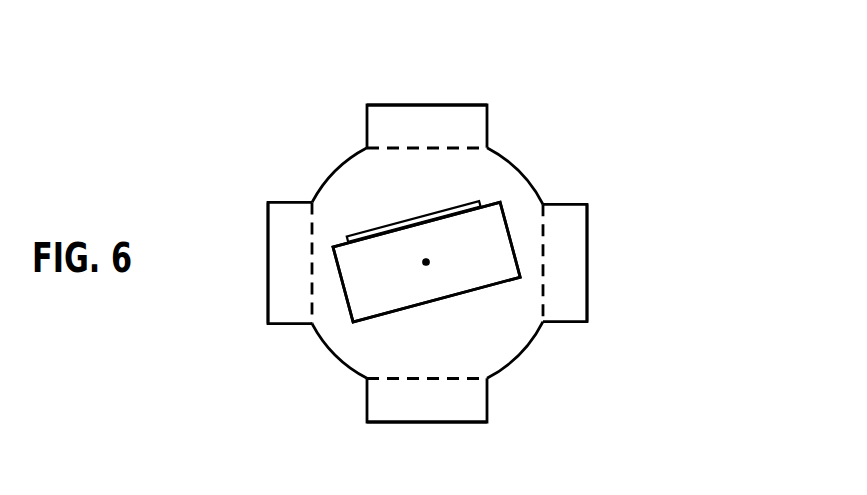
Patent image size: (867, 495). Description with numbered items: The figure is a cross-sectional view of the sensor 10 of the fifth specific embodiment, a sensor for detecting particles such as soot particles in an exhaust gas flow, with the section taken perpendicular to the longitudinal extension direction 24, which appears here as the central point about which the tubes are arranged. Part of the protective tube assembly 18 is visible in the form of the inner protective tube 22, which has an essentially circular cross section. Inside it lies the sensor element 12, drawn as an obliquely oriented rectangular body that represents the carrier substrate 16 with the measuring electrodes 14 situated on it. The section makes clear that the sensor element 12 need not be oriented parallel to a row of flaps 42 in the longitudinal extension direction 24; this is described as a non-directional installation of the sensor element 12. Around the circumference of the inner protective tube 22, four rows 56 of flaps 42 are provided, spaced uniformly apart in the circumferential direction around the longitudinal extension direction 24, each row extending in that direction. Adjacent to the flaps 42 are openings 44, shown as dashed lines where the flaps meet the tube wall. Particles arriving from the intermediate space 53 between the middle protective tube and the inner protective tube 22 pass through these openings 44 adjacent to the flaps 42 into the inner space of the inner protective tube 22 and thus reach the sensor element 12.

The sensor 10 is at (557, 366).
The sensor element 12 is at (494, 224).
The measuring electrodes 14 is at (378, 228).
The carrier substrate 16 is at (473, 254).
The protective tube assembly 18 is at (503, 157).
The inner protective tube 22 is at (462, 224).
The longitudinal extension direction 24 is at (426, 265).
The flaps 42 is at (468, 103).
The openings 44 is at (410, 148).
The intermediate space 53 is at (378, 188).
The rows of flaps 56 is at (438, 103).